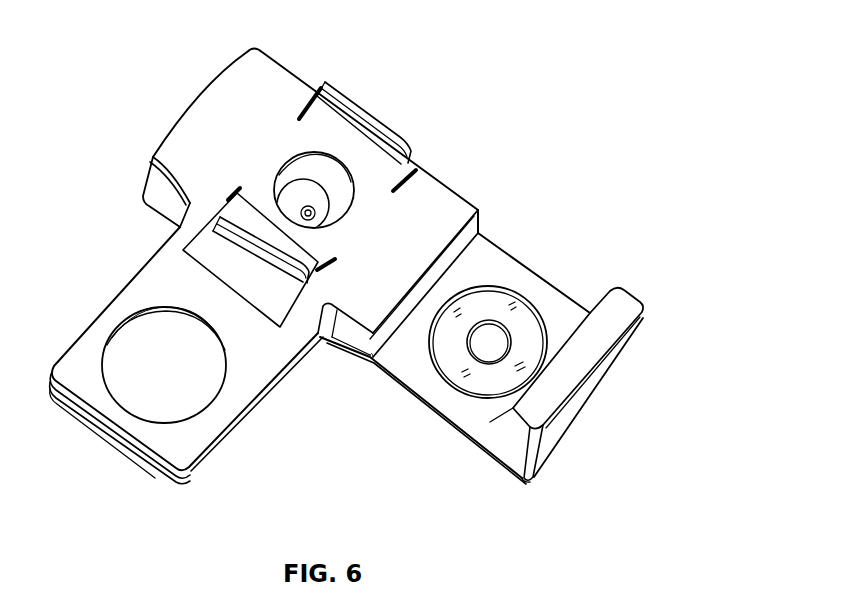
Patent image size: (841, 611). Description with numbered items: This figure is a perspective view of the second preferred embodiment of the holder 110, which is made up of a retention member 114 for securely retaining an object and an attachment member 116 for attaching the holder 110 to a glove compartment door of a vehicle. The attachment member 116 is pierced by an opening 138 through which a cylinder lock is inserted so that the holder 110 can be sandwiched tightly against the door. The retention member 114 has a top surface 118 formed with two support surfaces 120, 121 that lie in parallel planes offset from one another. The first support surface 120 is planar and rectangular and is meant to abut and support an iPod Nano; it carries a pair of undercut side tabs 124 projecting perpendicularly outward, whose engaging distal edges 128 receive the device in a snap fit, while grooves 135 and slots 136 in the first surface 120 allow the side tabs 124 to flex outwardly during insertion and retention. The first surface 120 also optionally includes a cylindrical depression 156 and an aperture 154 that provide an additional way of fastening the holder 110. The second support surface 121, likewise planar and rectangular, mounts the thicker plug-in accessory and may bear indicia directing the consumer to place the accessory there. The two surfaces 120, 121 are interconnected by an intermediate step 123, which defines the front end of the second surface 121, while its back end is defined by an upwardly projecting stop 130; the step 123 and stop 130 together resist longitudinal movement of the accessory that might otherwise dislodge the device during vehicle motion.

The holder 110 is at (146, 44).
The retention member 114 is at (147, 200).
The attachment member 116 is at (243, 392).
The top surface 118 is at (455, 223).
The first support surface 120 is at (445, 200).
The second support surface 121 is at (533, 294).
The intermediate step 123 is at (394, 325).
The side tabs 124 is at (414, 155).
The engaging distal edges 128 is at (356, 110).
The stop 130 is at (617, 368).
The grooves 135 is at (321, 90).
The slots 136 is at (316, 335).
The opening 138 is at (165, 410).
The aperture 154 is at (276, 181).
The cylindrical depression 156 is at (305, 180).